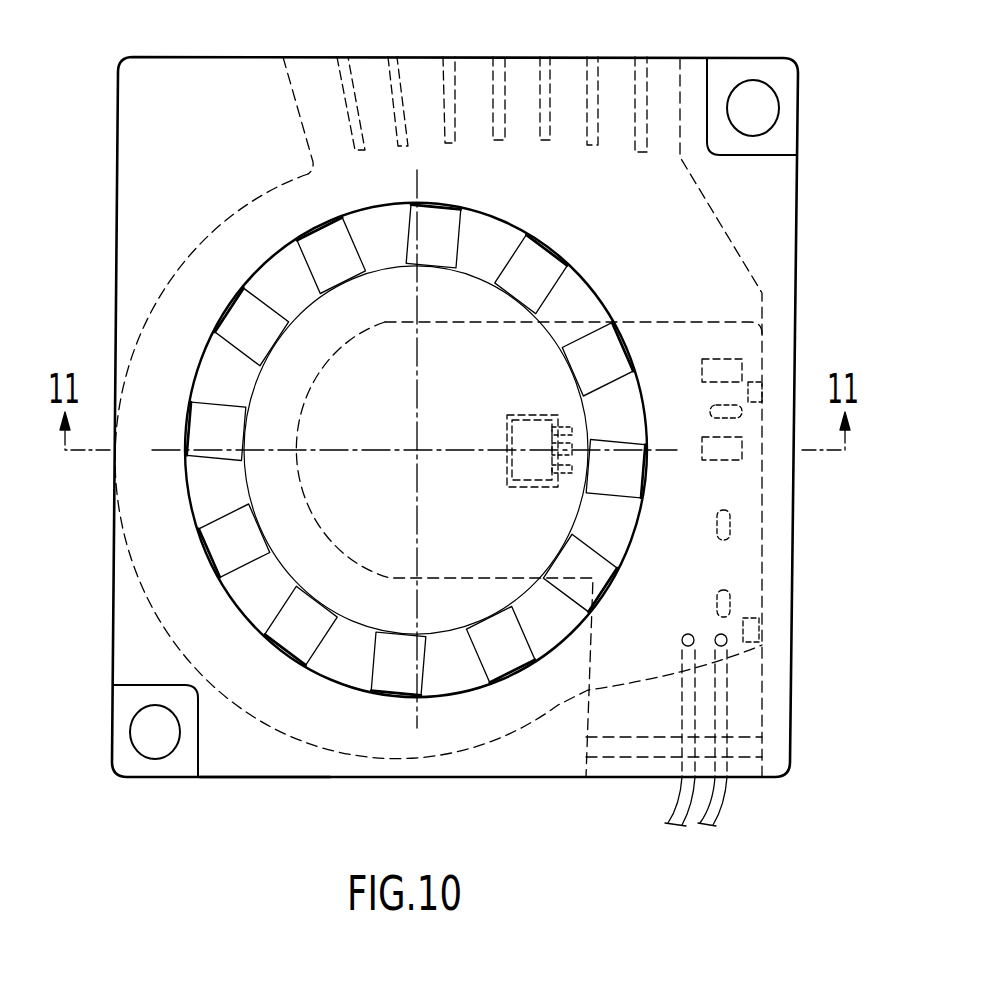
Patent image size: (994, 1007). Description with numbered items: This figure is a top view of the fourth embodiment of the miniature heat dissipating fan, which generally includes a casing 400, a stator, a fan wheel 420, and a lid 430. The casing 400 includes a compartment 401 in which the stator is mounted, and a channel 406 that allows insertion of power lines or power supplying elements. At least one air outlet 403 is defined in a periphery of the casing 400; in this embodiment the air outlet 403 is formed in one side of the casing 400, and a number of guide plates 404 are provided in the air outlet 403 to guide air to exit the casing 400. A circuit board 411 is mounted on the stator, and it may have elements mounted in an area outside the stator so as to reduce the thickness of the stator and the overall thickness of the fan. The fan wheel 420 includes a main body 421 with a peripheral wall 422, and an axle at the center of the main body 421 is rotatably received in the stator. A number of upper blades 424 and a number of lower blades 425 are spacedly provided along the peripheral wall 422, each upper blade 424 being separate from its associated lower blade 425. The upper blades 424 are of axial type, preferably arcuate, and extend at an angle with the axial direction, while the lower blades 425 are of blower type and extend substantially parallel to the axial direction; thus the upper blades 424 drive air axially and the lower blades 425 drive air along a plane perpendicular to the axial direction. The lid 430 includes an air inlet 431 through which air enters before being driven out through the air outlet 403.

The casing 400 is at (172, 772).
The compartment 401 is at (444, 743).
The air outlet 403 is at (612, 68).
The guide plates 404 is at (540, 76).
The channel 406 is at (752, 717).
The circuit board 411 is at (766, 326).
The fan wheel 420 is at (445, 424).
The main body 421 is at (472, 280).
The peripheral wall 422 is at (548, 313).
The upper blades 424 is at (612, 355).
The lower blades 425 is at (605, 505).
The lid 430 is at (263, 768).
The air inlet 431 is at (628, 545).